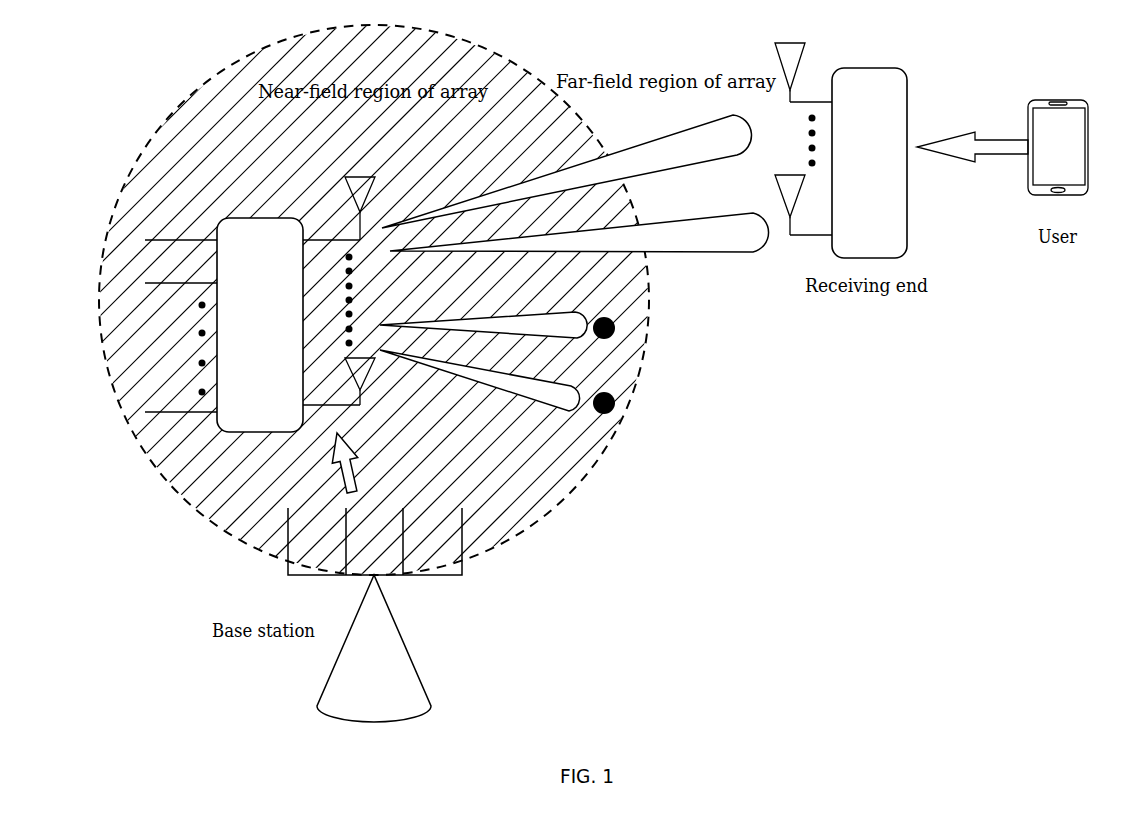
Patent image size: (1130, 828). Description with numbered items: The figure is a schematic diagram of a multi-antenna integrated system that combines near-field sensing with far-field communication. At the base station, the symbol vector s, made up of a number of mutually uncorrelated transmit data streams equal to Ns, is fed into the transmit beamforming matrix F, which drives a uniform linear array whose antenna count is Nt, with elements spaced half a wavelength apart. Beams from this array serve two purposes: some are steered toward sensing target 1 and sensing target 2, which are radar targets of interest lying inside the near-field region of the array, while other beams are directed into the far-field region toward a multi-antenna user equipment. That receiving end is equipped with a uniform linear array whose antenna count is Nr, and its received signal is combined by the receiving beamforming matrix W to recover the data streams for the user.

The transmit beamforming matrix F is at (260, 325).
The receiving beamforming matrix W is at (869, 163).
The symbol vector s is at (162, 326).
The number of transmit data streams Ns is at (191, 349).
The number of transmit antennas Nt is at (344, 291).
The number of receive antennas Nr is at (802, 139).
The sensing target 1 is at (505, 311).
The sensing target 2 is at (505, 382).